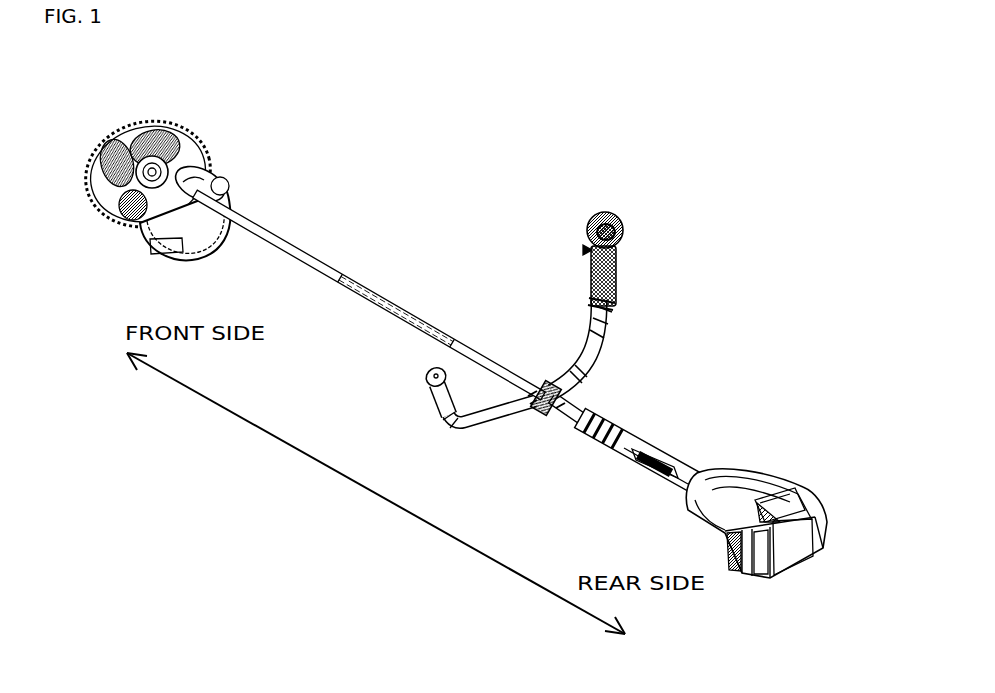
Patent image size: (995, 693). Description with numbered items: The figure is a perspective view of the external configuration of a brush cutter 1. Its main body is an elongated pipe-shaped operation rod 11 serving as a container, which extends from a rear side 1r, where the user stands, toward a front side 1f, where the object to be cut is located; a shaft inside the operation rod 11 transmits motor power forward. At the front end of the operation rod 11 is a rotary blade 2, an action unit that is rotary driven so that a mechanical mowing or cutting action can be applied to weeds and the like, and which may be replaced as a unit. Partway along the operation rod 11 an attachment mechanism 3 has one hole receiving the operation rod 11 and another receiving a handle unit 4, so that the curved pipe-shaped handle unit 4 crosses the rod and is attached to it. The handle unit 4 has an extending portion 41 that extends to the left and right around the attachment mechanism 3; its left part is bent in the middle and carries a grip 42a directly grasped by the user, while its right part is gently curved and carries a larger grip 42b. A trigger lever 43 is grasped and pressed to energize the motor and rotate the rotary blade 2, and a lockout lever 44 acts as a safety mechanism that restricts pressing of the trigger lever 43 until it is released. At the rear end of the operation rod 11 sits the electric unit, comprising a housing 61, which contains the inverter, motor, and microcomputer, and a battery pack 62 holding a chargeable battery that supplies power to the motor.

The brush cutter 1 is at (752, 140).
The front side 1f is at (250, 165).
The rear side 1r is at (805, 428).
The rotary blade 2 is at (168, 130).
The attachment mechanism 3 is at (547, 387).
The handle unit 4 is at (529, 349).
The operation rod 11 is at (318, 243).
The extending portion 41 is at (445, 437).
The grip 42a is at (440, 400).
The grip 42b is at (623, 228).
The trigger lever 43 is at (583, 248).
The lockout lever 44 is at (638, 290).
The housing 61 is at (720, 473).
The battery pack 62 is at (746, 576).